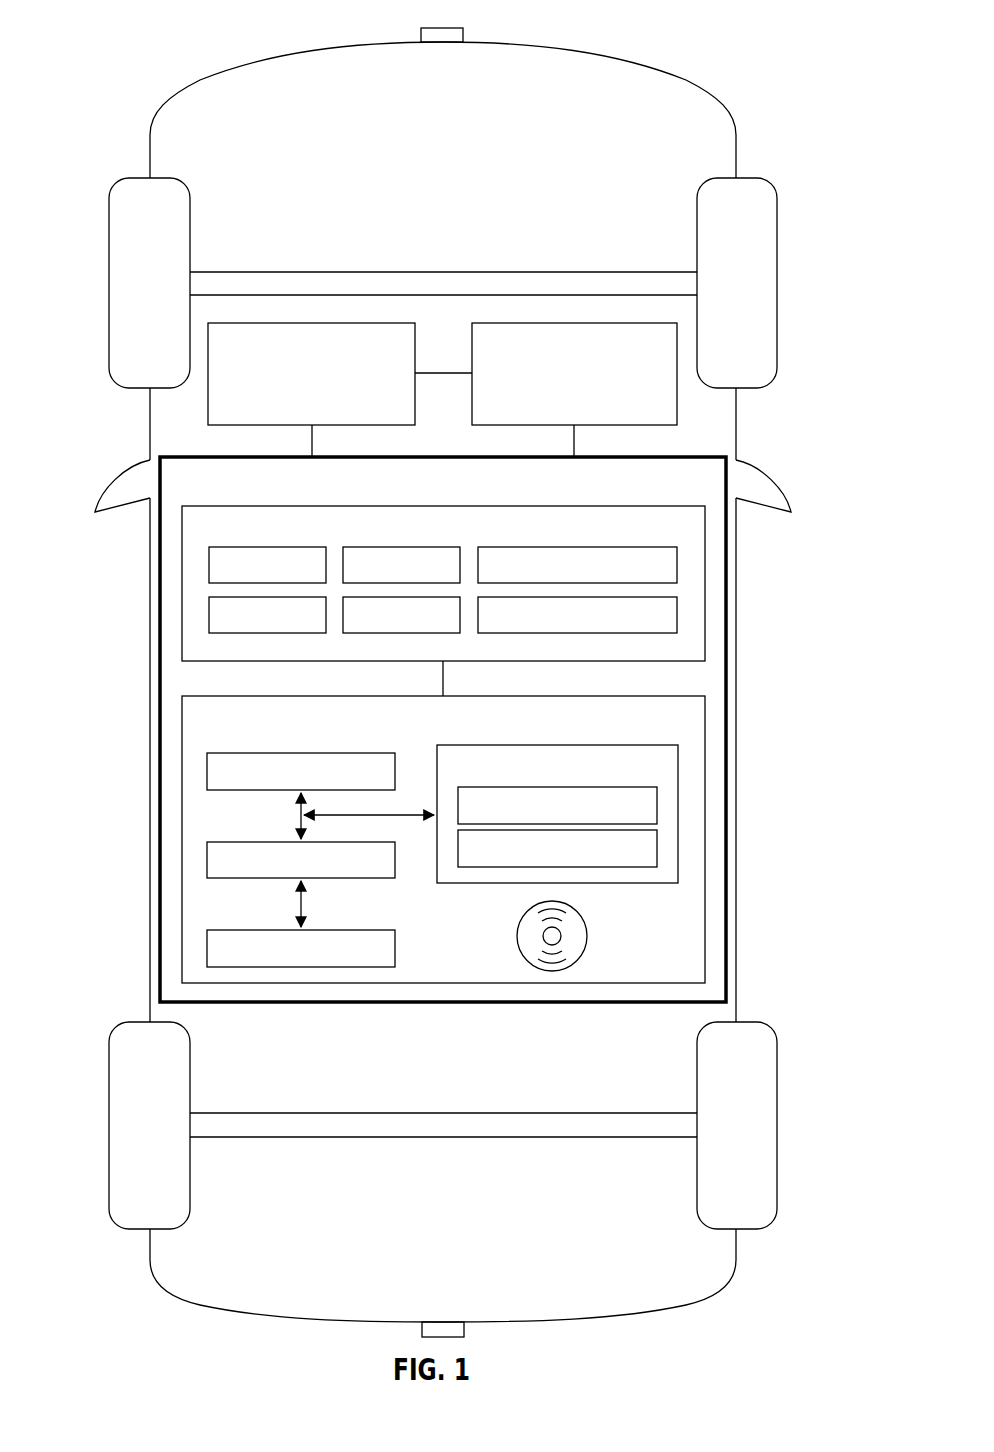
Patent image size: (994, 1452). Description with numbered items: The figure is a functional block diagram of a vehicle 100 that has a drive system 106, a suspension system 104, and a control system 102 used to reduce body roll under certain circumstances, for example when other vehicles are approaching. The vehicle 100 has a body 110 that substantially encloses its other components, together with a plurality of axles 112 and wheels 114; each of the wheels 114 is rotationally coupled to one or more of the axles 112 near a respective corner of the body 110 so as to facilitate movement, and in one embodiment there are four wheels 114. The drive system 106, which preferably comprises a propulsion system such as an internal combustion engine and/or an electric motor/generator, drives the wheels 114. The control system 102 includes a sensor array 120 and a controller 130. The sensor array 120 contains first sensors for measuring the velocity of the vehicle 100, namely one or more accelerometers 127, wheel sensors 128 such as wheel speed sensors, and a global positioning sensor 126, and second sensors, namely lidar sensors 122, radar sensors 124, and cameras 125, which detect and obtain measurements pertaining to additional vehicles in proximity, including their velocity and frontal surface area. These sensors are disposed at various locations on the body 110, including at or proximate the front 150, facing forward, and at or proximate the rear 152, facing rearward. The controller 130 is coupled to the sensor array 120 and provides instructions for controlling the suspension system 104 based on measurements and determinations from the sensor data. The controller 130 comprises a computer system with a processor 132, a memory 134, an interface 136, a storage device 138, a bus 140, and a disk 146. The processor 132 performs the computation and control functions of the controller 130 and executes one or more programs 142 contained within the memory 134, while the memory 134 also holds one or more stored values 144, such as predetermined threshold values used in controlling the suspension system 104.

The vehicle 100 is at (162, 33).
The control system 102 is at (662, 457).
The suspension system 104 is at (575, 323).
The drive system 106 is at (290, 323).
The body 110 is at (150, 583).
The axles 112 is at (366, 266).
The wheels 114 is at (109, 283).
The sensor array 120 is at (582, 506).
The lidar sensors 122 is at (270, 547).
The radar sensors 124 is at (208, 615).
The cameras 125 is at (362, 547).
The global positioning sensor 126 is at (402, 633).
The accelerometers 127 is at (677, 565).
The wheel sensors 128 is at (677, 615).
The controller 130 is at (182, 720).
The processor 132 is at (250, 753).
The memory 134 is at (603, 745).
The interface 136 is at (272, 842).
The storage device 138 is at (272, 930).
The bus 140 is at (393, 817).
The program 142 is at (657, 805).
The stored values 144 is at (657, 848).
The disk 146 is at (583, 920).
The front 150 is at (464, 38).
The rear 152 is at (465, 1330).